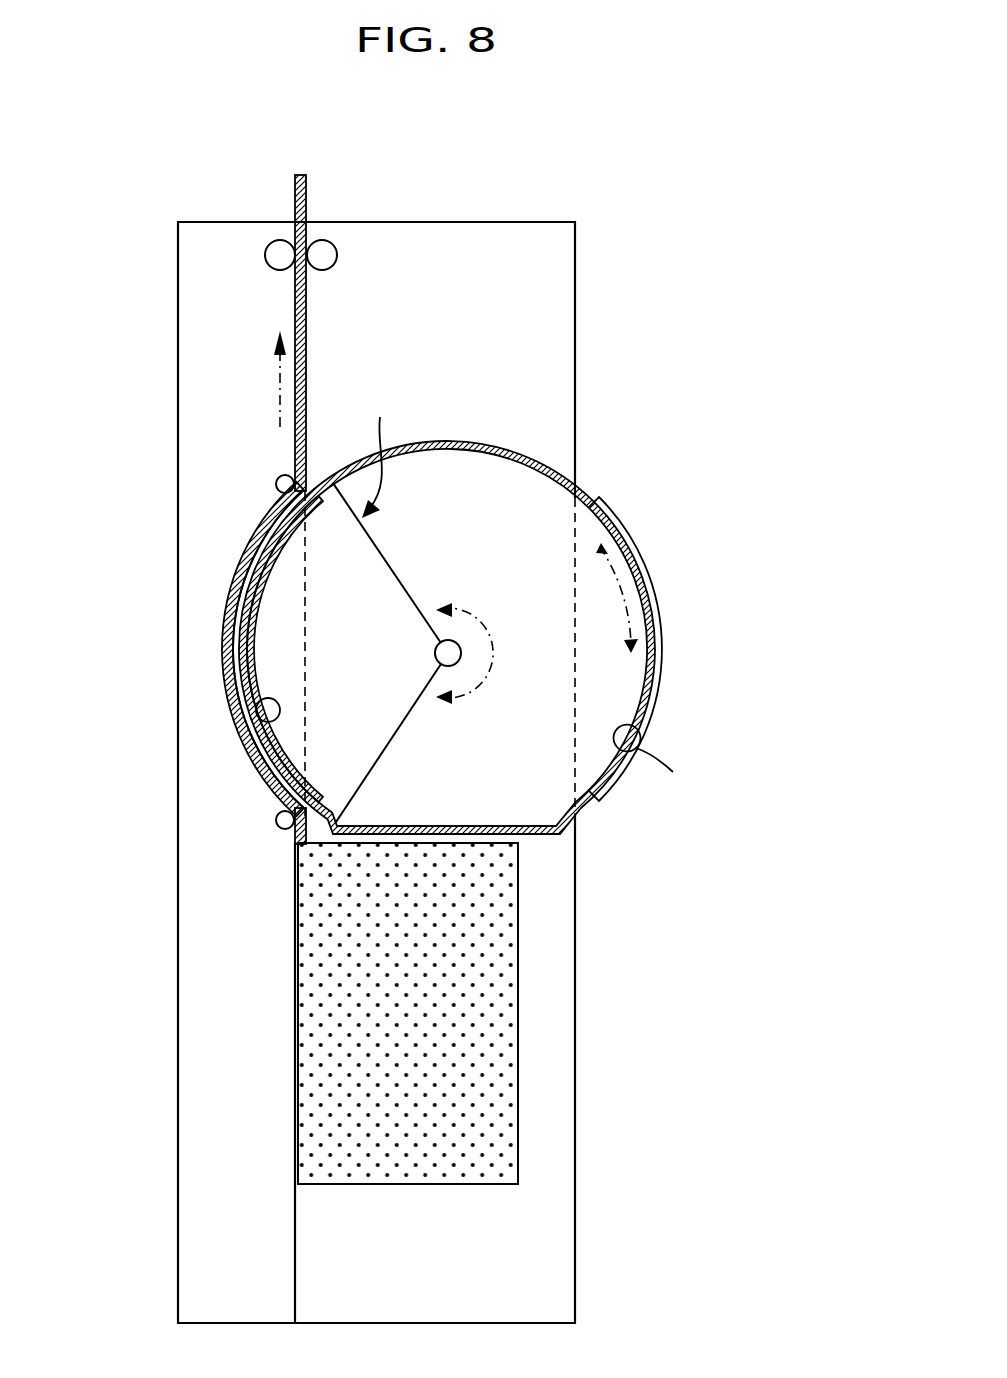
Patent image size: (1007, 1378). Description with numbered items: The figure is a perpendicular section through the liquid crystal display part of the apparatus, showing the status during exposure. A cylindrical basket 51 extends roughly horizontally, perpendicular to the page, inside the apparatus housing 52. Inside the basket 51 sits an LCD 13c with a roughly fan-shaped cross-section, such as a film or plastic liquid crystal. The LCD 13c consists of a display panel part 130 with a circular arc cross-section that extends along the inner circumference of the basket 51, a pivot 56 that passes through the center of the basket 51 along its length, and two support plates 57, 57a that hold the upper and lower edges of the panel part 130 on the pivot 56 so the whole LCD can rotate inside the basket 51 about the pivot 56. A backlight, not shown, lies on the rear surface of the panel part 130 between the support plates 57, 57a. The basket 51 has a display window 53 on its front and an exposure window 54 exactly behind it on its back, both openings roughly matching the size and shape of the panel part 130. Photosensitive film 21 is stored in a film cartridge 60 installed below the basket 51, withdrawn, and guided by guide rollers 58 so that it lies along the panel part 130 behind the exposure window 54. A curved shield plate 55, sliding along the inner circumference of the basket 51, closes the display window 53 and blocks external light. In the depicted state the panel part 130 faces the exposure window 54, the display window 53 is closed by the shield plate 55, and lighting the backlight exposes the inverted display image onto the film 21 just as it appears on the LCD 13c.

The apparatus housing 52 is at (577, 268).
The cylindrical basket 51 is at (522, 452).
The display window 53 is at (664, 620).
The exposure window 54 is at (226, 648).
The photosensitive film 21 is at (240, 577).
The display panel part 130 is at (250, 736).
The guide rollers 58 is at (270, 243).
The pivot 56 is at (436, 652).
The support plate 57 is at (393, 552).
The support plate 57a is at (388, 751).
The LCD 13c is at (379, 448).
The shield plate 55 is at (659, 770).
The film cartridge 60 is at (520, 1005).